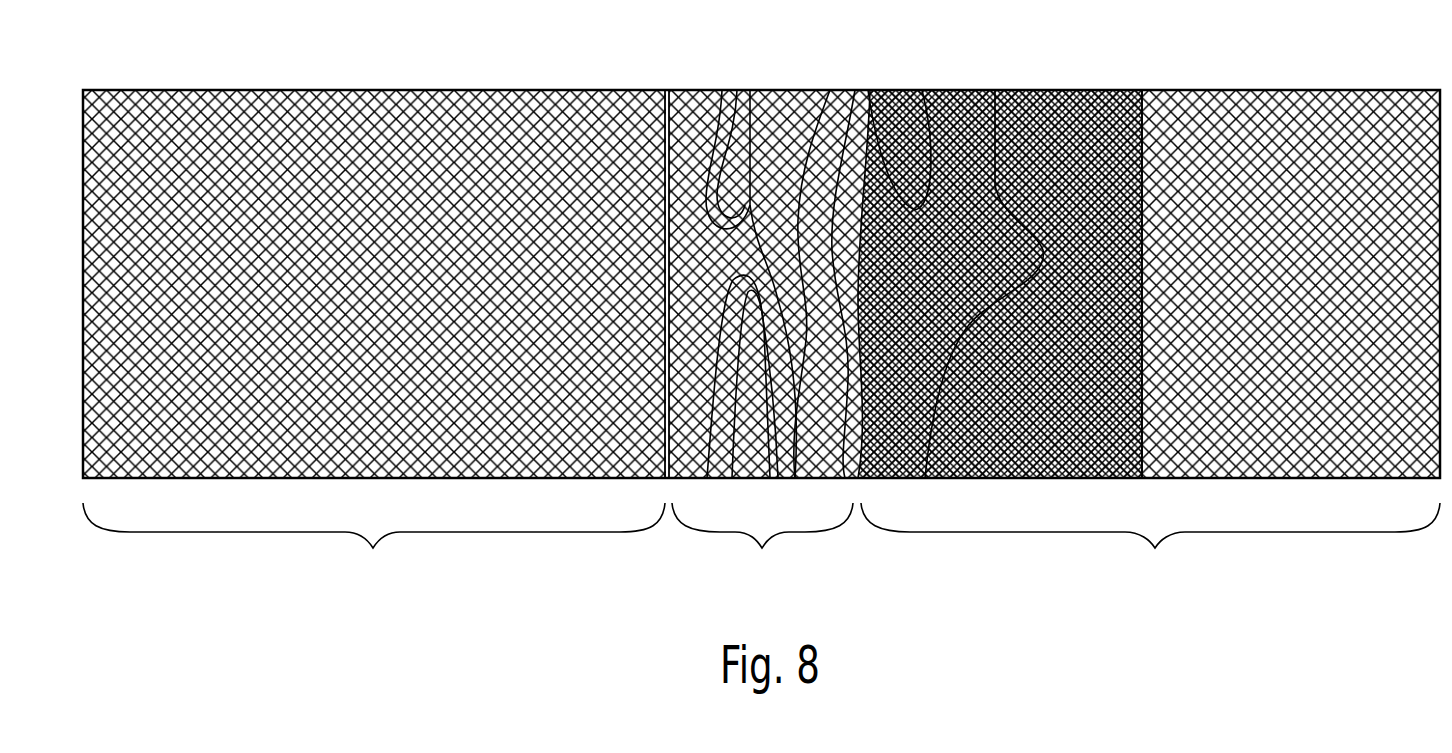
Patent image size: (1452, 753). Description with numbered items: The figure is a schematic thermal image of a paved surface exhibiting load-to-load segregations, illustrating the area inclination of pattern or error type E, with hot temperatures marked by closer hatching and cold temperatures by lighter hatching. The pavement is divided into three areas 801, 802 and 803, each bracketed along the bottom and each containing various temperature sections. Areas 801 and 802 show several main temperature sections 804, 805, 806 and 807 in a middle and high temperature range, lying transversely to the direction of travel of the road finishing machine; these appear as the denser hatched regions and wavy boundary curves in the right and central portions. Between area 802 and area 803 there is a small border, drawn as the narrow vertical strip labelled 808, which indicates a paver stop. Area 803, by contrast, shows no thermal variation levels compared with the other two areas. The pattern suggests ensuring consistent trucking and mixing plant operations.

The area 801 is at (1149, 341).
The area 802 is at (764, 341).
The area 803 is at (374, 341).
The main temperature section 804 is at (1316, 148).
The main temperature section 805 is at (1052, 148).
The main temperature section 806 is at (784, 150).
The main temperature section 807 is at (718, 176).
The interface line 808 is at (652, 253).